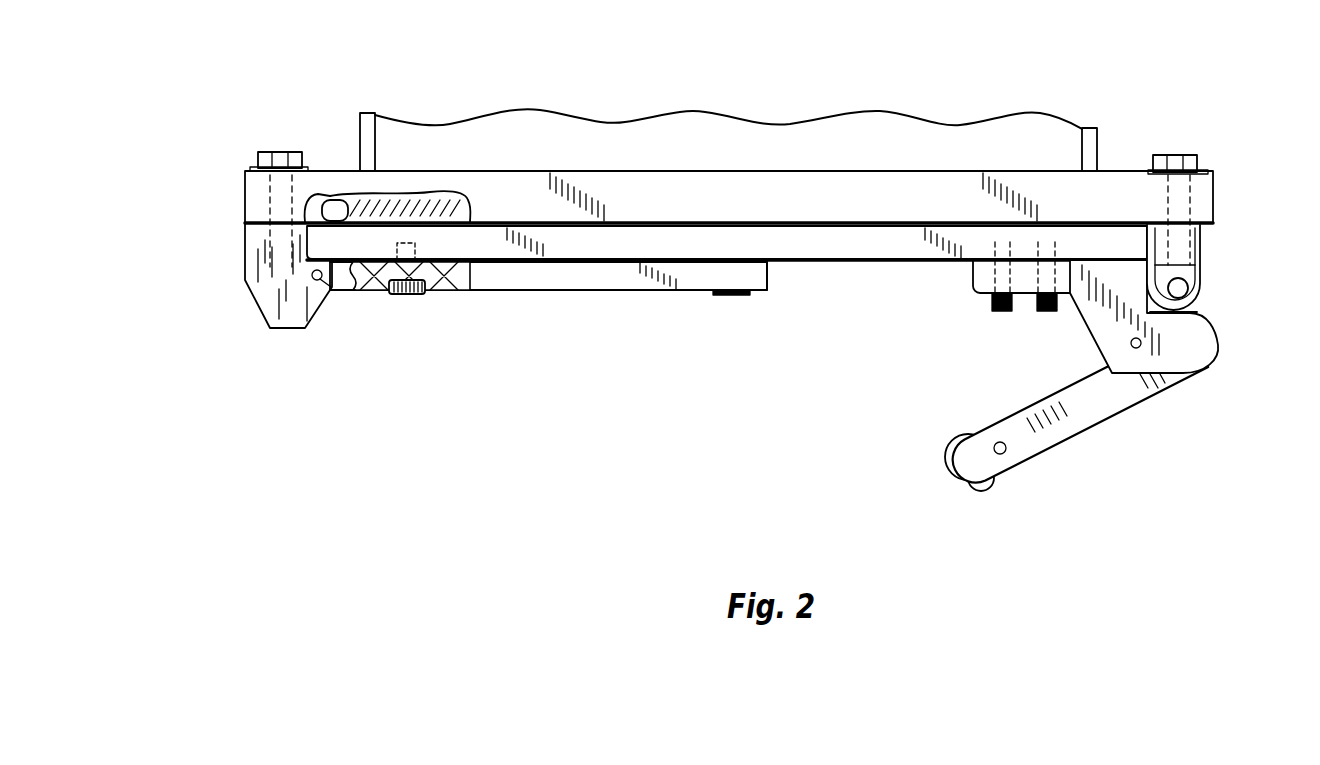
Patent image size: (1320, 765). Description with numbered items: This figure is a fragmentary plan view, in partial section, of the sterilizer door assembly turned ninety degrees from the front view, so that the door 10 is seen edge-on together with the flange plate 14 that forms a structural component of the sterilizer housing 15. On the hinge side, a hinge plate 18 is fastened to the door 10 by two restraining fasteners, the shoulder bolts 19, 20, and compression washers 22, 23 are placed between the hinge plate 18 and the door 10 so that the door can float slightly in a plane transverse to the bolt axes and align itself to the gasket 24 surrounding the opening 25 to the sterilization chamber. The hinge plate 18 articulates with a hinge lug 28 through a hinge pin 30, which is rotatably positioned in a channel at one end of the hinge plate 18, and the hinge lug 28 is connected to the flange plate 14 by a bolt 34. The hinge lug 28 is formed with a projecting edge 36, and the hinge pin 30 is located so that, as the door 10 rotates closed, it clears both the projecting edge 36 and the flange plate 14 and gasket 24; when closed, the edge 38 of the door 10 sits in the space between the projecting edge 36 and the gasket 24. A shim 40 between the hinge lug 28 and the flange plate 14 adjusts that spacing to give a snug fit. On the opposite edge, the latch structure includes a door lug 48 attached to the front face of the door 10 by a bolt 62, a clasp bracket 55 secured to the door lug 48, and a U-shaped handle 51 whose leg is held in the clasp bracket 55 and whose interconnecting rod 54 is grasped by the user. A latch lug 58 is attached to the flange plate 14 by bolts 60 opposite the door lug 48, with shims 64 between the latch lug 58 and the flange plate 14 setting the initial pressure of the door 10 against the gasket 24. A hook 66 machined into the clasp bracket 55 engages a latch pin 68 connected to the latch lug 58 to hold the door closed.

The door 10 is at (664, 206).
The flange plate 14 is at (720, 192).
The sterilizer housing 15 is at (617, 148).
The hinge plate 18 is at (622, 280).
The shoulder bolt 19 is at (410, 295).
The shoulder bolt 20 is at (747, 294).
The compression washer 22 is at (767, 270).
The compression washer 23 is at (443, 292).
The gasket 24 is at (330, 207).
The opening 25 is at (405, 212).
The hinge lug 28 is at (267, 287).
The hinge pin 30 is at (319, 281).
The bolt 34 is at (257, 153).
The projecting edge 36 is at (343, 290).
The edge of the door 38 is at (320, 243).
The shim 40 is at (245, 223).
The door lug 48 is at (1203, 345).
The handle 51 is at (1030, 443).
The interconnecting rod 54 is at (970, 490).
The clasp bracket 55 is at (1163, 385).
The latch lug 58 is at (1195, 263).
The bolt 60 is at (1190, 162).
The bolt 62 is at (995, 312).
The shim 64 is at (1200, 233).
The hook 66 is at (1187, 311).
The latch pin 68 is at (1180, 288).